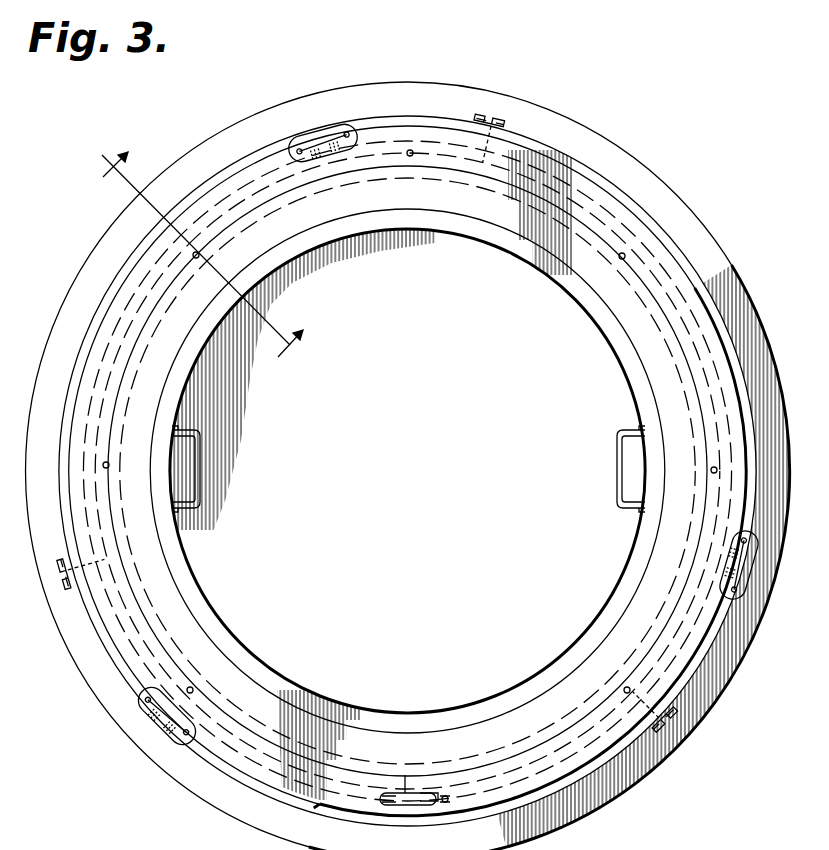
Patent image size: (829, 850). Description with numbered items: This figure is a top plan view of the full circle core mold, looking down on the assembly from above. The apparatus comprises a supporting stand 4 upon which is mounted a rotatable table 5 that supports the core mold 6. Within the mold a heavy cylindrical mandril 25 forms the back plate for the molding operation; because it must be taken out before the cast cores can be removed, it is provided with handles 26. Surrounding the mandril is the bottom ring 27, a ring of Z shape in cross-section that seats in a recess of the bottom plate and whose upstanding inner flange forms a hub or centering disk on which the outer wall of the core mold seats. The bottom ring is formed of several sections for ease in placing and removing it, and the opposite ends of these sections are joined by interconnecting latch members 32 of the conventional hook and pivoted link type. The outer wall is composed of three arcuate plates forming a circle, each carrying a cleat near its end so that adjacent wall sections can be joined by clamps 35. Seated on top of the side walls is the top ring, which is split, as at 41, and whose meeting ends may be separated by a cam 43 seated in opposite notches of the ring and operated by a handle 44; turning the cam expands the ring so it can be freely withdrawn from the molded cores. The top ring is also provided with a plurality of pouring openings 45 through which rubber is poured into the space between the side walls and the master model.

The supporting stand 4 is at (190, 268).
The rotatable table 5 is at (689, 208).
The core mold 6 is at (110, 668).
The cylindrical mandril 25 is at (430, 717).
The handles 26 is at (203, 471).
The bottom ring 27 is at (325, 803).
The latch members 32 is at (507, 116).
The clamps 35 is at (320, 130).
The split 41 is at (415, 806).
The cam 43 is at (398, 806).
The handle 44 is at (455, 805).
The pouring openings 45 is at (199, 258).